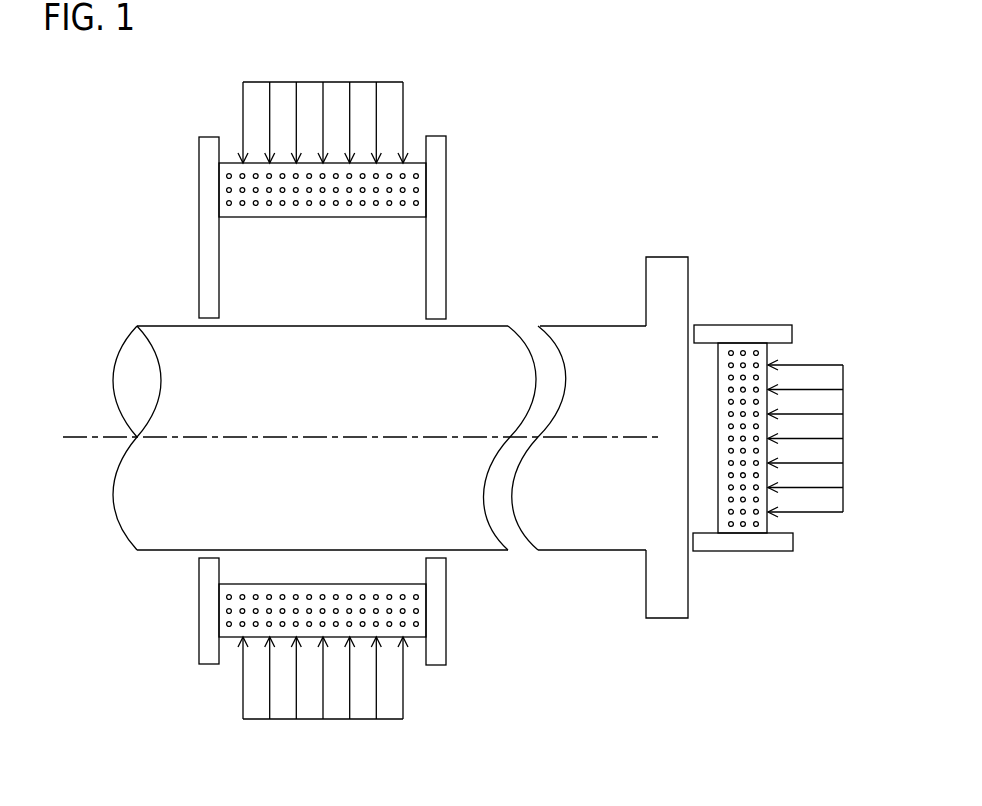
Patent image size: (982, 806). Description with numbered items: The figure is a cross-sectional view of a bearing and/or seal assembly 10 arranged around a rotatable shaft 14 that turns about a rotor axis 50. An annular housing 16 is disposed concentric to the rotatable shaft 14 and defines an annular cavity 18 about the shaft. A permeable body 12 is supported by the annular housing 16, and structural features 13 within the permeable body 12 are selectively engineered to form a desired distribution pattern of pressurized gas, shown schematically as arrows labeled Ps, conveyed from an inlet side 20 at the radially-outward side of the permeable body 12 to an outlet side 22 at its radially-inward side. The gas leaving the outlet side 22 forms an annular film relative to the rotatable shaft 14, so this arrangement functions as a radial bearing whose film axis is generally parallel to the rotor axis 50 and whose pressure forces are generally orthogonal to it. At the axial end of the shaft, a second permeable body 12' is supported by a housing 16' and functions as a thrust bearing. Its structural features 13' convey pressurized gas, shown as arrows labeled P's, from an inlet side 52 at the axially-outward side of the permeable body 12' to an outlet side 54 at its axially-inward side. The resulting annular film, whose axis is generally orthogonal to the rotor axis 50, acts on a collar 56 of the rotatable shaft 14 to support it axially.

The bearing and/or seal assembly 10 is at (660, 173).
The permeable body 12 is at (278, 401).
The permeable body 12' is at (742, 477).
The structural features 13 is at (323, 400).
The structural features 13' is at (690, 439).
The rotatable shaft 14 is at (340, 396).
The annular housing 16 is at (359, 400).
The housing 16' is at (748, 415).
The annular cavity 18 is at (283, 307).
The inlet side 20 is at (230, 161).
The outlet side 22 is at (367, 218).
The rotor axis 50 is at (85, 437).
The inlet side 52 is at (767, 523).
The outlet side 54 is at (718, 502).
The collar 56 is at (663, 583).